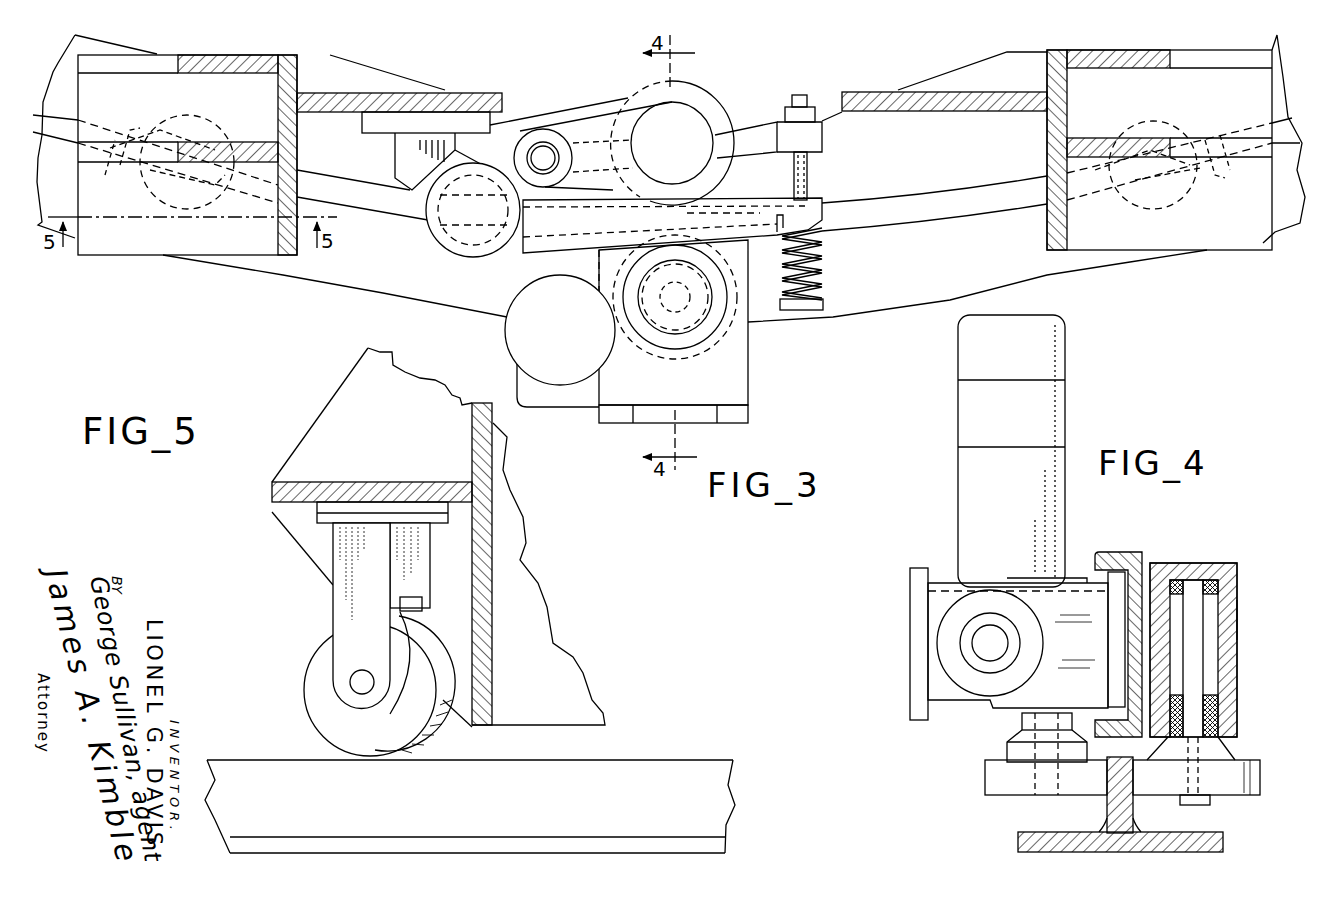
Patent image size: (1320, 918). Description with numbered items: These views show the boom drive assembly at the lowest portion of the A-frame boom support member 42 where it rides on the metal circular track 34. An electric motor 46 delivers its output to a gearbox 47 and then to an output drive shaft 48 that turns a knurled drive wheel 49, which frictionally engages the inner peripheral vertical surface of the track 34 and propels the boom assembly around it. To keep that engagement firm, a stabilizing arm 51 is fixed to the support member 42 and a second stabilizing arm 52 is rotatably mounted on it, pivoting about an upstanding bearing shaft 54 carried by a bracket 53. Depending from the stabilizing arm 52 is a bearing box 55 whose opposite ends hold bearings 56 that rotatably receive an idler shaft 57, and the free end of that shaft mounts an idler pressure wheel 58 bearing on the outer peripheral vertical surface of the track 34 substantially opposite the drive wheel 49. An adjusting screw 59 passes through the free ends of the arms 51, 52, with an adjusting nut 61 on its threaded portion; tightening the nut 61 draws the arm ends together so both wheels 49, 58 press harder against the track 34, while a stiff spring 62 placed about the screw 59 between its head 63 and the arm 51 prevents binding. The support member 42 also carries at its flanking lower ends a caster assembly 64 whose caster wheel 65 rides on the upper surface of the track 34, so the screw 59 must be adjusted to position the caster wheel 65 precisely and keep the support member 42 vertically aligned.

In FIG. 4, the circular track 34 is at (1116, 805).
In FIG. 3, the boom support member 42 is at (292, 56).
In FIG. 5, the boom support member 42 is at (493, 537).
In FIG. 3, the electric motor 46 is at (514, 330).
In FIG. 4, the electric motor 46 is at (1050, 403).
In FIG. 3, the gearbox 47 is at (744, 388).
In FIG. 4, the gearbox 47 is at (1018, 645).
In FIG. 4, the output drive shaft 48 is at (1022, 722).
In FIG. 4, the knurled drive wheel 49 is at (990, 778).
In FIG. 3, the stabilizing arm 51 is at (522, 248).
In FIG. 4, the stabilizing arm 51 is at (1114, 552).
In FIG. 3, the stabilizing arm 52 is at (590, 126).
In FIG. 4, the stabilizing arm 52 is at (1160, 564).
In FIG. 3, the bracket 53 is at (572, 192).
In FIG. 3, the bearing shaft 54 is at (543, 152).
In FIG. 4, the bearing box 55 is at (1237, 614).
In FIG. 4, the bearings 56 is at (1212, 580).
In FIG. 4, the idler shaft 57 is at (1202, 665).
In FIG. 4, the idler pressure wheel 58 is at (1256, 770).
In FIG. 3, the adjusting screw 59 is at (808, 178).
In FIG. 3, the adjusting nut 61 is at (794, 107).
In FIG. 3, the stiff spring 62 is at (820, 244).
In FIG. 3, the head of adjusting screw 63 is at (823, 305).
In FIG. 3, the caster assembly 64 is at (182, 214).
In FIG. 5, the caster assembly 64 is at (330, 586).
In FIG. 3, the caster wheel 65 is at (122, 168).
In FIG. 5, the caster wheel 65 is at (307, 665).